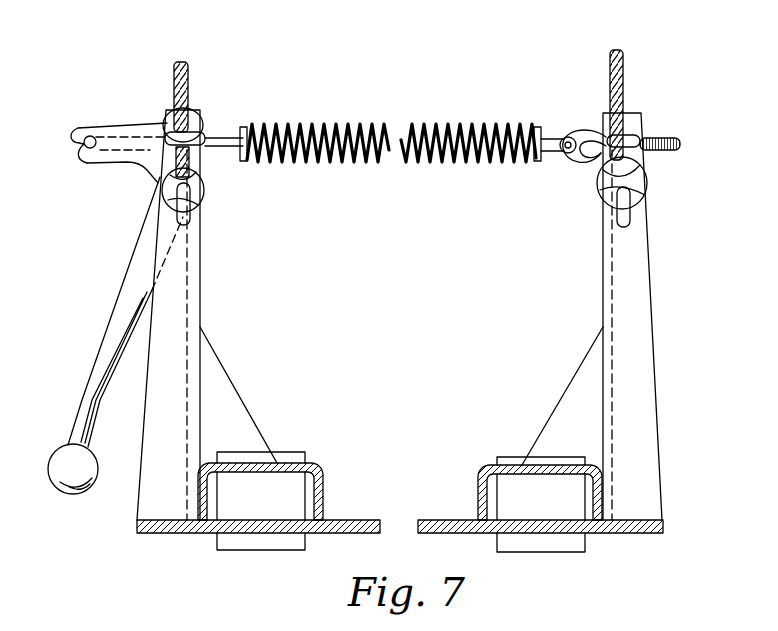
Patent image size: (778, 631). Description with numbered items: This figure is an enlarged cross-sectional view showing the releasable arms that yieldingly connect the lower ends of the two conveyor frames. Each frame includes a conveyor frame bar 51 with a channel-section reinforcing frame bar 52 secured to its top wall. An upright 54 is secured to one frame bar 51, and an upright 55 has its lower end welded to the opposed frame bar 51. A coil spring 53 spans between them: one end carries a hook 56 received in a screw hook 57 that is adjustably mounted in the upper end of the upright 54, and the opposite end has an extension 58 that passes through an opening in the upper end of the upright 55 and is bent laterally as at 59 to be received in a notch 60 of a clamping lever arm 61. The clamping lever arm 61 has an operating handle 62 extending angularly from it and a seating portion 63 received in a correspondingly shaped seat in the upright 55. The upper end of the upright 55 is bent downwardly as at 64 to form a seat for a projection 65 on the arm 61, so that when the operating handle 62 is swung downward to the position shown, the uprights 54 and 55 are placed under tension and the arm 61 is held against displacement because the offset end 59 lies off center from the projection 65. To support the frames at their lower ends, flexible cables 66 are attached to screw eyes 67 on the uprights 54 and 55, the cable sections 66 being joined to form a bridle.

The conveyor frame bar 51 is at (192, 534).
The reinforcing frame bar 52 is at (322, 468).
The coil spring 53 is at (433, 164).
The upright 54 is at (630, 373).
The upright 55 is at (185, 372).
The hook 56 is at (553, 138).
The screw hook 57 is at (560, 162).
The extension 58 is at (232, 150).
The laterally bent end 59 is at (79, 150).
The notch 60 is at (84, 133).
The clamping lever arm 61 is at (129, 128).
The operating handle 62 is at (92, 371).
The seating portion 63 is at (204, 206).
The downwardly bent upper end 64 is at (192, 117).
The projection 65 is at (205, 118).
The flexible cable 66 is at (183, 76).
The screw eye 67 is at (198, 236).